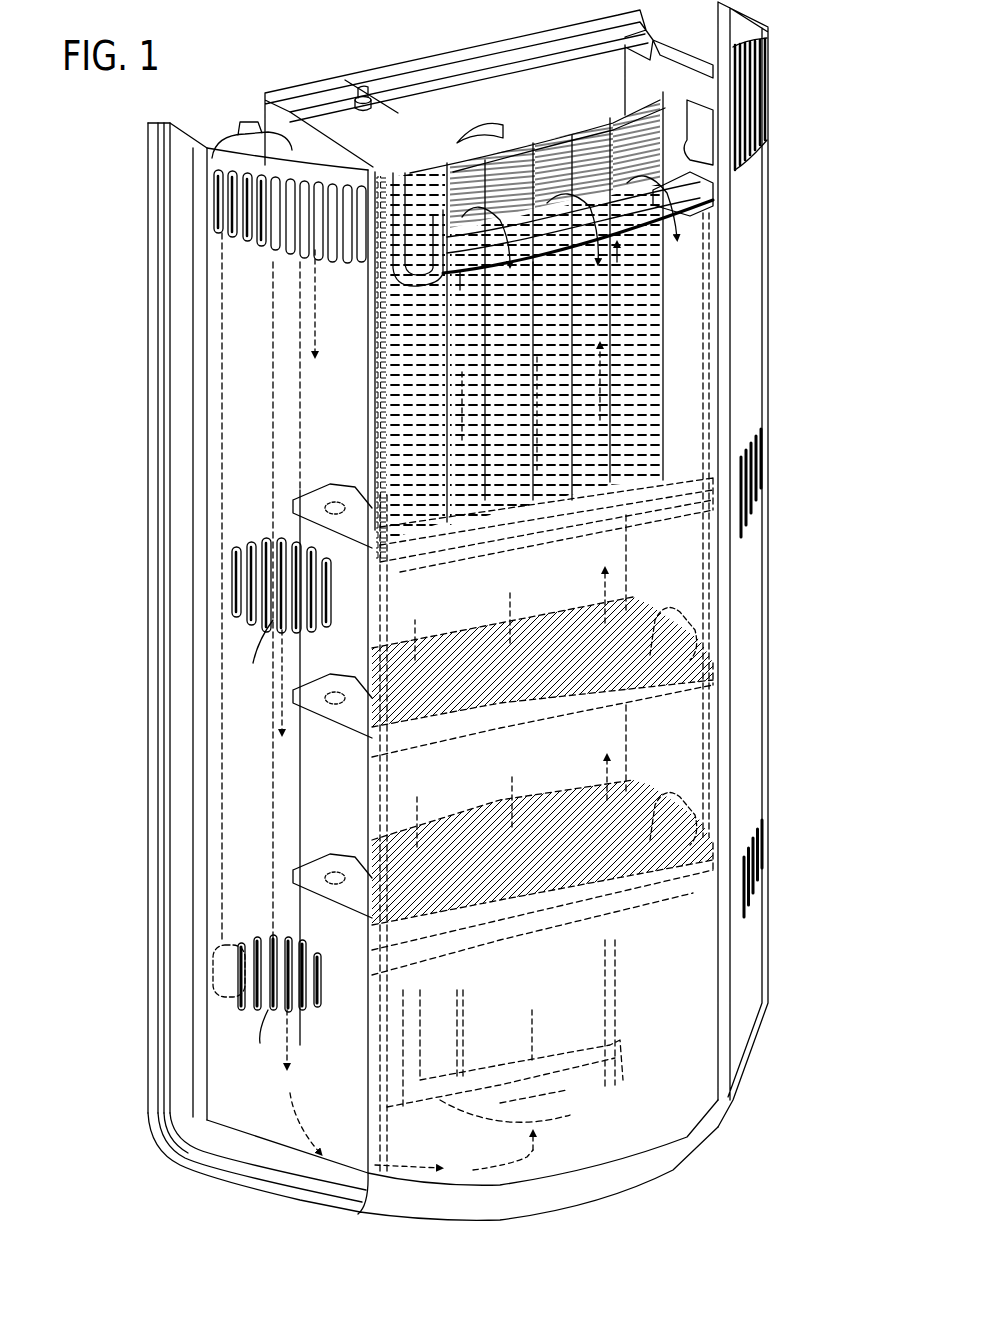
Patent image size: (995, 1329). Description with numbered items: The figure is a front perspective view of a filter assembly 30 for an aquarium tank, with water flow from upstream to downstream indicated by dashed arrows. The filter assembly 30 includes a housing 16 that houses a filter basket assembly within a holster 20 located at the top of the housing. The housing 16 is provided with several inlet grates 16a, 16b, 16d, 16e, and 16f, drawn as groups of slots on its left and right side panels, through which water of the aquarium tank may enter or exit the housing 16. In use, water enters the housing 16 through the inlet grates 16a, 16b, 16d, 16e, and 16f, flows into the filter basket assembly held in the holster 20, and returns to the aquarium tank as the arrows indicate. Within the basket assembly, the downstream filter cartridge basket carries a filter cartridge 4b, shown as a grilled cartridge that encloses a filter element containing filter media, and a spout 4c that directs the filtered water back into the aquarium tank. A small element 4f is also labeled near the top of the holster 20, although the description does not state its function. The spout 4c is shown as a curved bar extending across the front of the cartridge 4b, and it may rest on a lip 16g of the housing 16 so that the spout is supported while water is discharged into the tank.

The filter assembly 30 is at (103, 165).
The housing 16 is at (148, 378).
The inlet grate 16a is at (313, 235).
The inlet grate 16b is at (233, 583).
The inlet grate 16d is at (757, 97).
The inlet grate 16e is at (753, 473).
The inlet grate 16f is at (757, 867).
The lip 16g is at (395, 160).
The holster 20 is at (437, 58).
The locating pin 4f is at (362, 98).
The filter cartridge 4b is at (567, 123).
The spout 4c is at (693, 217).